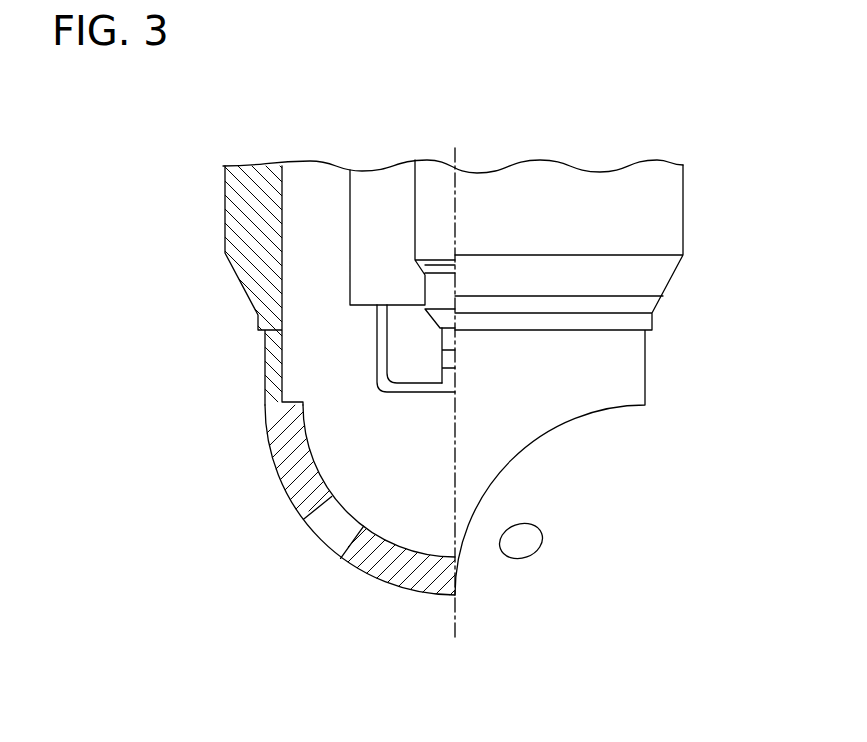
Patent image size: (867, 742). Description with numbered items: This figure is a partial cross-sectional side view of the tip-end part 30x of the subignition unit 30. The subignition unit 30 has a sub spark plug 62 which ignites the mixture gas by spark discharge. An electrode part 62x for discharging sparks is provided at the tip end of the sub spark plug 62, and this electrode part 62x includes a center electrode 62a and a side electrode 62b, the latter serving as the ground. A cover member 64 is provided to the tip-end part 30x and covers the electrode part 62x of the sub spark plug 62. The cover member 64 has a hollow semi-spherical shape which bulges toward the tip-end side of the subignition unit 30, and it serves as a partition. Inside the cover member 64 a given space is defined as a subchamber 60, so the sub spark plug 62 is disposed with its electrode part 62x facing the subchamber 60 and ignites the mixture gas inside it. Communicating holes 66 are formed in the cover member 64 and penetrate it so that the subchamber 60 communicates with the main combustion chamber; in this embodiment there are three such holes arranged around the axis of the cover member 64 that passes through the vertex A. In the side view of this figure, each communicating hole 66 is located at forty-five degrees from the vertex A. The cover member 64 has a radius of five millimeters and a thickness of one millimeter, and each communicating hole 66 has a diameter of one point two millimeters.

The tip-end part 30x is at (670, 148).
The subignition unit 30 is at (600, 329).
The subchamber 60 is at (318, 425).
The sub spark plug 62 is at (431, 152).
The center electrode 62a is at (441, 395).
The side electrode 62b is at (402, 395).
The electrode part 62x is at (398, 402).
The cover member 64 is at (374, 580).
The communicating hole 66 is at (320, 527).
The vertex A is at (455, 600).